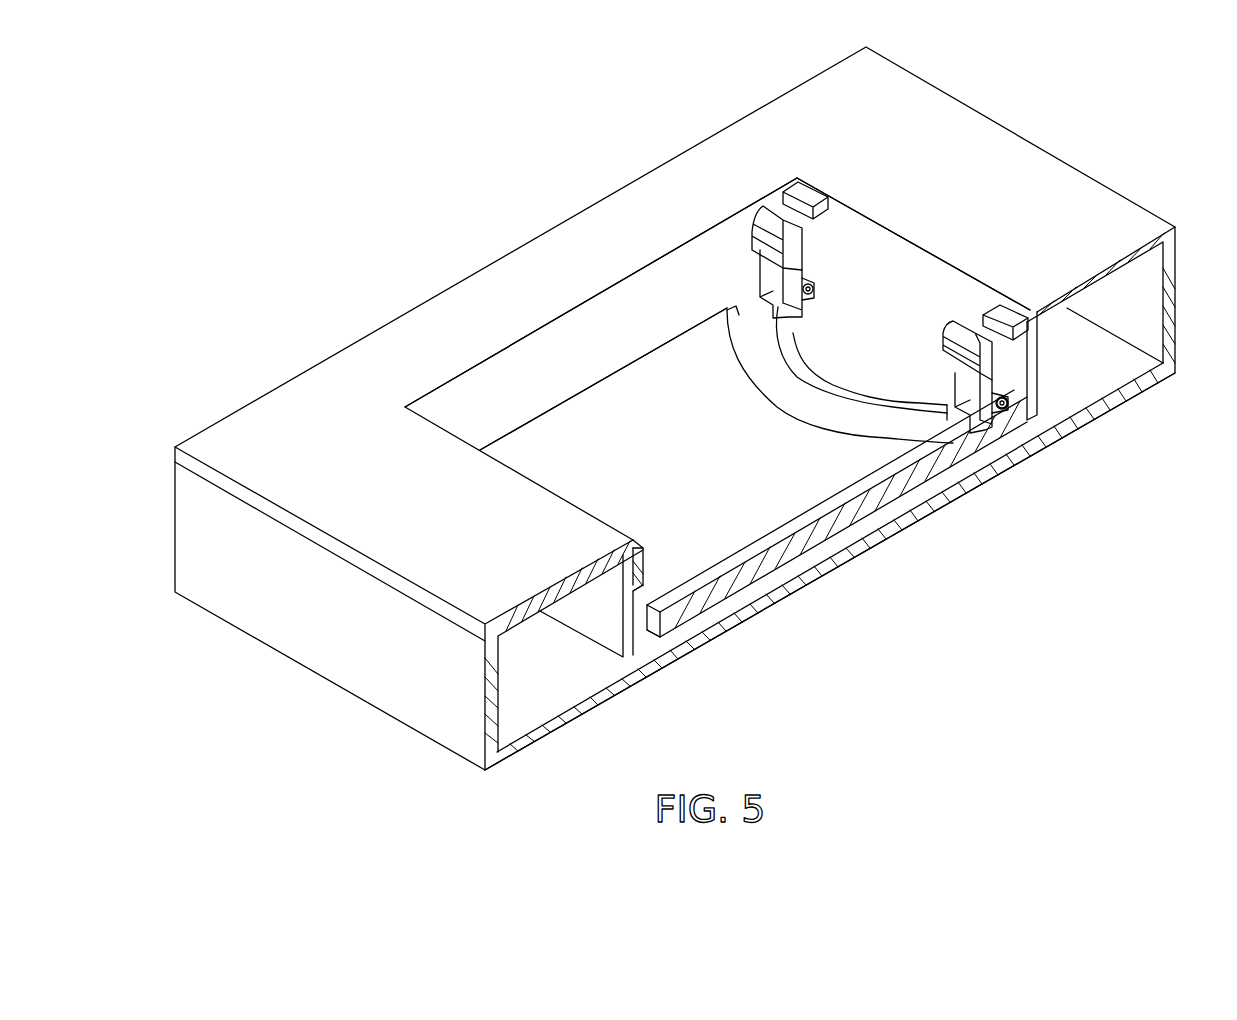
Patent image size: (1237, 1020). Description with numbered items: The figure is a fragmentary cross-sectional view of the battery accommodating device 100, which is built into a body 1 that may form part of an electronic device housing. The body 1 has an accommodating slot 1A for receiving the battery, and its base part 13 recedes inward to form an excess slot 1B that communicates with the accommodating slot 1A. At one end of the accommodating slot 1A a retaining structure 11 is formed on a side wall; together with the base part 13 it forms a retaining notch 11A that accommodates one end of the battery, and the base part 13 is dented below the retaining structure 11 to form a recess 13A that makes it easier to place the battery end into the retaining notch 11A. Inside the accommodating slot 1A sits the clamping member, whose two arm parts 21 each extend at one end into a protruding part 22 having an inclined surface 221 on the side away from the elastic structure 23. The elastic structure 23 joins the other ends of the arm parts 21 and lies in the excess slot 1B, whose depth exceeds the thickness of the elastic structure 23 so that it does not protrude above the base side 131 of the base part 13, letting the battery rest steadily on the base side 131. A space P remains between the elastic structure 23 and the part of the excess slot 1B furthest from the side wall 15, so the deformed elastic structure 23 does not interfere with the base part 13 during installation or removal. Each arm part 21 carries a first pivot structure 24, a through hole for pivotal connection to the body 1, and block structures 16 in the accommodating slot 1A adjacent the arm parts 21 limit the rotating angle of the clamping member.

The battery accommodating device 100 is at (274, 108).
The body 1 is at (1180, 290).
The accommodating slot 1A is at (607, 331).
The excess slot 1B is at (864, 352).
The base side 131 is at (565, 438).
The block structure 16 is at (800, 203).
The inclined surface 221 is at (768, 212).
The protruding part 22 is at (800, 252).
The side wall 15 is at (955, 305).
The space P is at (767, 362).
The elastic structure 23 is at (806, 400).
The first pivot structure 24 is at (1006, 408).
The arm part 21 is at (946, 440).
The base part 13 is at (856, 575).
The recess 13A is at (643, 640).
The retaining structure 11 is at (640, 571).
The retaining notch 11A is at (644, 599).